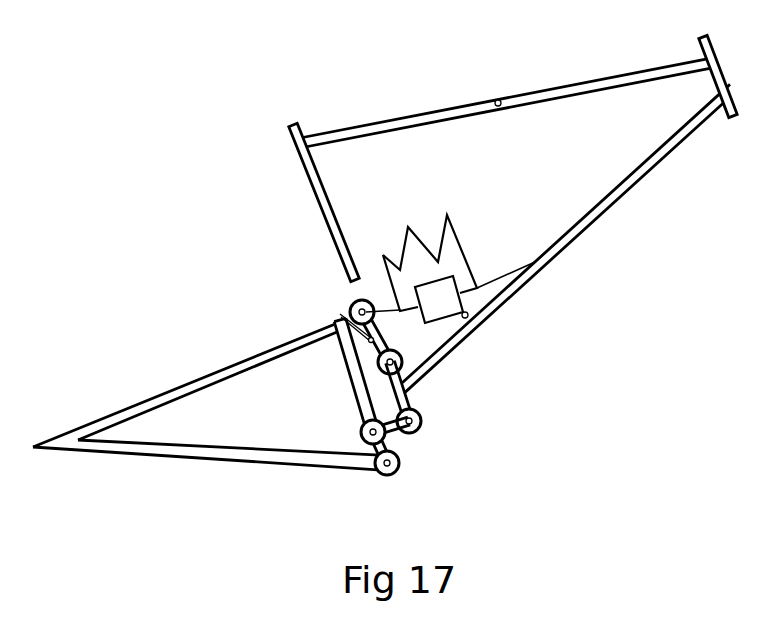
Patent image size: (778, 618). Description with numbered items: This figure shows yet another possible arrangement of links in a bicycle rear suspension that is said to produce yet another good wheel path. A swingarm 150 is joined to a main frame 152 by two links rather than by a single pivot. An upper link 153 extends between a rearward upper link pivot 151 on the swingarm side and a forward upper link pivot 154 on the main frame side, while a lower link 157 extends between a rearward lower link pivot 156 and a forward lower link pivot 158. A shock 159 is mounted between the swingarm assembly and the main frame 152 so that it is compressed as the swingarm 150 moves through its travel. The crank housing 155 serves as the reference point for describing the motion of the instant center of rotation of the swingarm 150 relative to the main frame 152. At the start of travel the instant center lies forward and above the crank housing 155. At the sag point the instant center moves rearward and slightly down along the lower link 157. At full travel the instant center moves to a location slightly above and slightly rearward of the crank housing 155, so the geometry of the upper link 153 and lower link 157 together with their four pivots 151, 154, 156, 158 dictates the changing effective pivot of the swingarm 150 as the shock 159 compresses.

The swingarm 150 is at (218, 369).
The rearward upper link pivot 151 is at (355, 305).
The main frame 152 is at (498, 103).
The upper link 153 is at (338, 321).
The forward upper link pivot 154 is at (383, 367).
The crank housing 155 is at (387, 465).
The rearward lower link pivot 156 is at (370, 433).
The lower link 157 is at (400, 440).
The forward lower link pivot 158 is at (425, 422).
The shock 159 is at (468, 316).